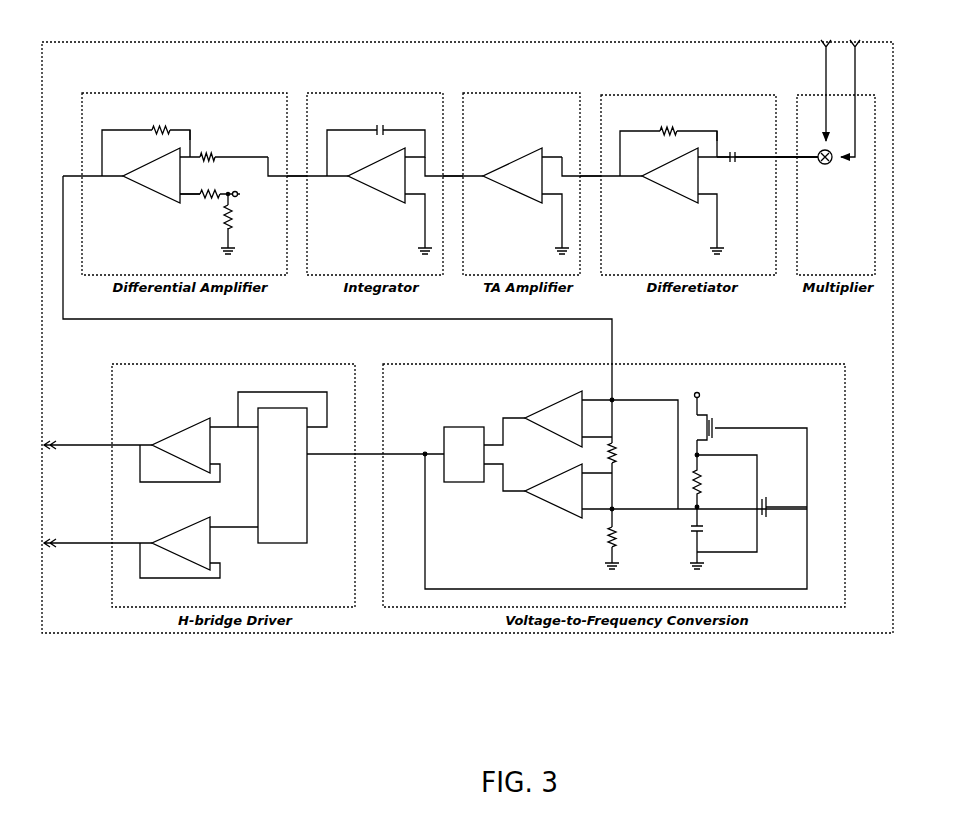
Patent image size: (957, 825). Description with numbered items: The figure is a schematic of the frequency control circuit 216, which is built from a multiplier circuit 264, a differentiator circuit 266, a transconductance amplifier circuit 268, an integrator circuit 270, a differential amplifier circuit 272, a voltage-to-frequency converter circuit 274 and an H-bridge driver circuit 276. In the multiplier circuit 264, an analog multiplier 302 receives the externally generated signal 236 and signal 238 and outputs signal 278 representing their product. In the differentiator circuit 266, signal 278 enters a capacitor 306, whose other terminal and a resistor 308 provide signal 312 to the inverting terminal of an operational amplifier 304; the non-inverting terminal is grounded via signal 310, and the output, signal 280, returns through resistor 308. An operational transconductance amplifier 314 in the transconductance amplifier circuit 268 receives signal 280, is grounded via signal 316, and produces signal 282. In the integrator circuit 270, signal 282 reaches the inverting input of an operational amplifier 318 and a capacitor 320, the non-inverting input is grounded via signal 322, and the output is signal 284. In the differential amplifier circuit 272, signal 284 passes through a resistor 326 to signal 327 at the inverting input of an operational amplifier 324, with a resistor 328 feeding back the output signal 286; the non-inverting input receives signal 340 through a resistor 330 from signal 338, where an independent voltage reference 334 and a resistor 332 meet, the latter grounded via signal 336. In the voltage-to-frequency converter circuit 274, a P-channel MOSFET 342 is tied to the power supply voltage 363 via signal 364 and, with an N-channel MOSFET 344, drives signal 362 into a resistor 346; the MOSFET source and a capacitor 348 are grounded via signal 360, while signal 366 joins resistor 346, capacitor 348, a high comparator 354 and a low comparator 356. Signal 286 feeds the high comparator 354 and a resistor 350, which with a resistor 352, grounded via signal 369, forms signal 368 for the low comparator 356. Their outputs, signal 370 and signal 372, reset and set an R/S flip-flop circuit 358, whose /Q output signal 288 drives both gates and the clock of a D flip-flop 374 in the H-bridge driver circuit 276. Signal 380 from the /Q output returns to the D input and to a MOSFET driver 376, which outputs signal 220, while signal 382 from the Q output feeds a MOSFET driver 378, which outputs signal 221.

The frequency control circuit 216 is at (136, 27).
The signal 220 is at (92, 442).
The signal 221 is at (92, 540).
The signal 236 is at (859, 64).
The signal 238 is at (821, 54).
The multiplier circuit 264 is at (809, 95).
The differentiator circuit 266 is at (642, 96).
The transconductance amplifier circuit 268 is at (527, 92).
The integrator circuit 270 is at (364, 92).
The differential amplifier circuit 272 is at (137, 92).
The voltage-to-frequency converter circuit 274 is at (774, 362).
The H-bridge driver circuit 276 is at (177, 362).
The signal 278 is at (787, 166).
The signal 280 is at (588, 186).
The signal 282 is at (453, 181).
The signal 284 is at (297, 181).
The signal 286 is at (57, 327).
The signal 288 is at (371, 448).
The analog multiplier 302 is at (821, 171).
The operational amplifier 304 is at (670, 198).
The capacitor 306 is at (741, 149).
The resistor 308 is at (671, 122).
The signal 310 is at (722, 209).
The signal 312 is at (714, 128).
The operational transconductance amplifier 314 is at (528, 196).
The signal 316 is at (557, 221).
The operational amplifier 318 is at (380, 196).
The capacitor 320 is at (384, 121).
The signal 322 is at (422, 213).
The operational amplifier 324 is at (150, 192).
The resistor 326 is at (214, 152).
The signal 327 is at (191, 131).
The resistor 328 is at (164, 123).
The resistor 330 is at (208, 201).
The resistor 332 is at (236, 224).
The independent voltage reference 334 is at (249, 189).
The signal 336 is at (222, 240).
The signal 338 is at (229, 190).
The signal 340 is at (183, 201).
The P-channel MOSFET 342 is at (716, 419).
The N-channel MOSFET 344 is at (769, 494).
The resistor 346 is at (706, 482).
The capacitor 348 is at (711, 534).
The resistor 350 is at (622, 455).
The resistor 352 is at (622, 538).
The high comparator 354 is at (549, 400).
The low comparator 356 is at (554, 511).
The R/S flip-flop circuit 358 is at (464, 422).
The signal 360 is at (763, 531).
The signal 362 is at (761, 466).
The power supply voltage 363 is at (702, 372).
The signal 364 is at (692, 401).
The signal 366 is at (600, 397).
The signal 368 is at (603, 518).
The signal 369 is at (603, 553).
The signal 370 is at (496, 421).
The signal 372 is at (498, 481).
The D flip-flop 374 is at (268, 546).
The MOSFET driver 376 is at (196, 424).
The MOSFET driver 378 is at (190, 525).
The signal 380 is at (251, 389).
The signal 382 is at (233, 530).